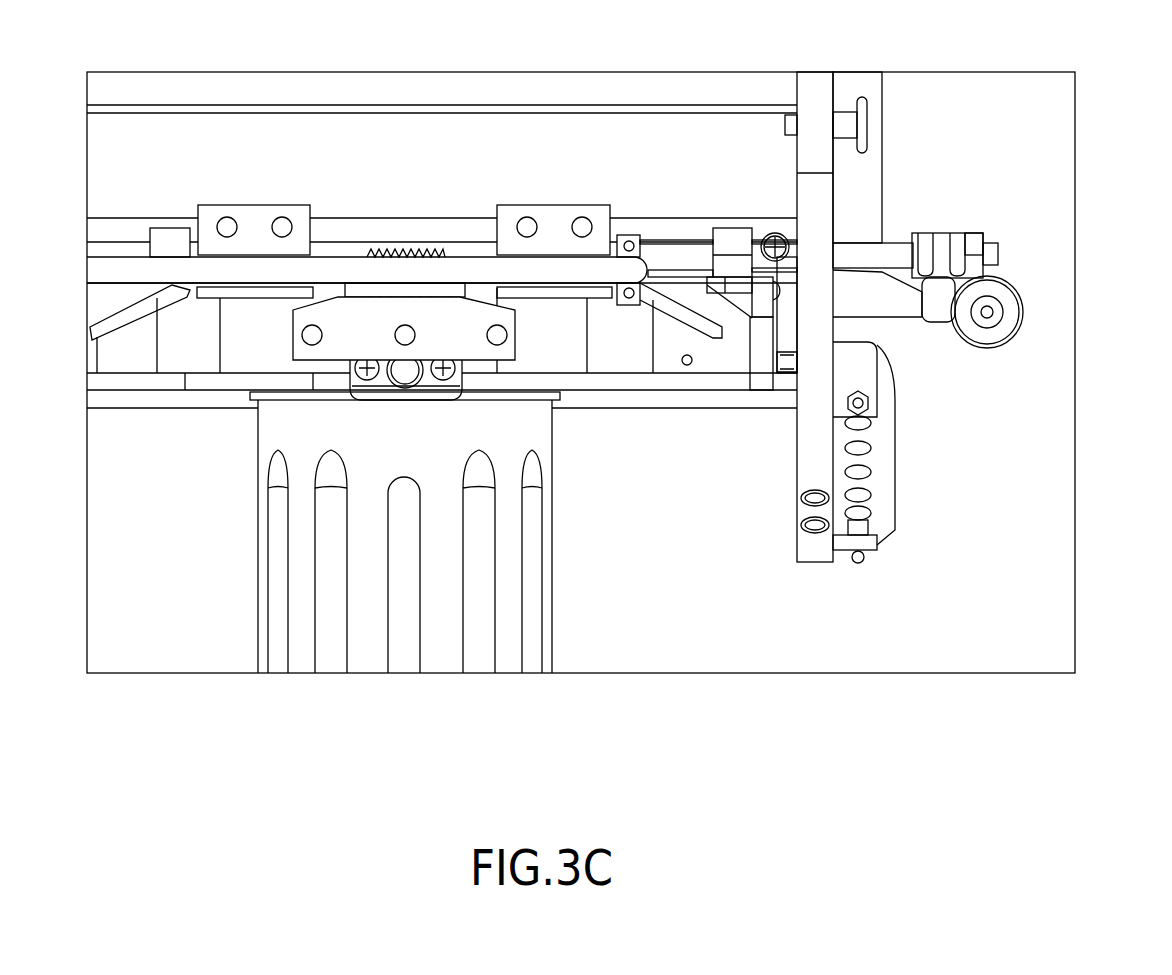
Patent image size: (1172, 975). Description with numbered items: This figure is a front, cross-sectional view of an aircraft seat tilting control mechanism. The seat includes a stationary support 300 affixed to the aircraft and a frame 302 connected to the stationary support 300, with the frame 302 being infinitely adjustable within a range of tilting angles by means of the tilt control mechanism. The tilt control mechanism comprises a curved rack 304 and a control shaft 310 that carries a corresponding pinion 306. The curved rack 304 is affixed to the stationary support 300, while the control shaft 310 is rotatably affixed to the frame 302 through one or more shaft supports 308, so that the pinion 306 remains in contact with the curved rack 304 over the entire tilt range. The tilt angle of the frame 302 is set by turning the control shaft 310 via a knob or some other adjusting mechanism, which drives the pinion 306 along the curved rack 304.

The stationary support 300 is at (532, 590).
The frame 302 is at (820, 343).
The curved rack 304 is at (323, 347).
The pinion 306 is at (405, 262).
The shaft support 308 is at (255, 213).
The control shaft 310 is at (167, 270).